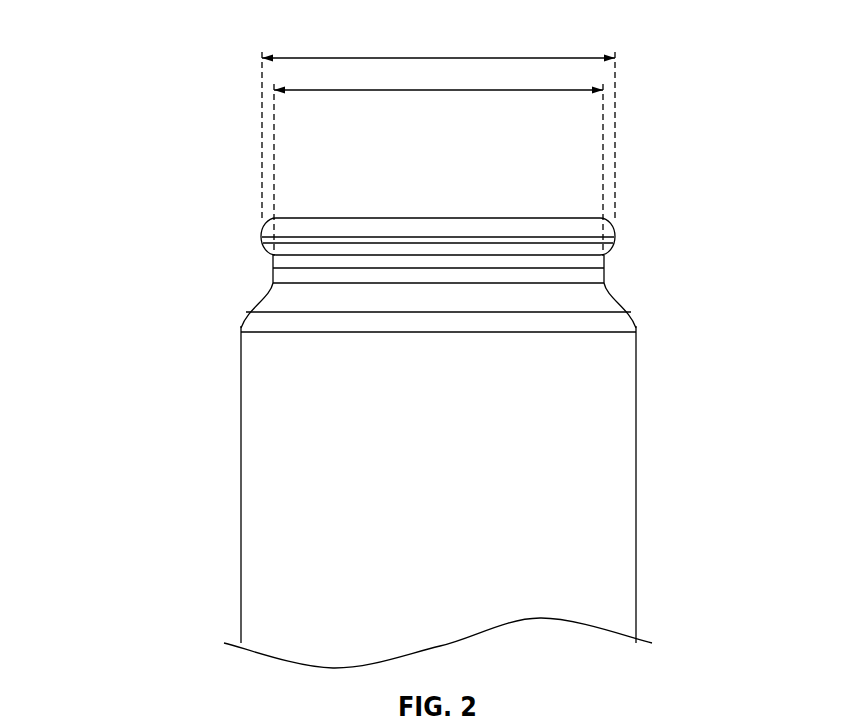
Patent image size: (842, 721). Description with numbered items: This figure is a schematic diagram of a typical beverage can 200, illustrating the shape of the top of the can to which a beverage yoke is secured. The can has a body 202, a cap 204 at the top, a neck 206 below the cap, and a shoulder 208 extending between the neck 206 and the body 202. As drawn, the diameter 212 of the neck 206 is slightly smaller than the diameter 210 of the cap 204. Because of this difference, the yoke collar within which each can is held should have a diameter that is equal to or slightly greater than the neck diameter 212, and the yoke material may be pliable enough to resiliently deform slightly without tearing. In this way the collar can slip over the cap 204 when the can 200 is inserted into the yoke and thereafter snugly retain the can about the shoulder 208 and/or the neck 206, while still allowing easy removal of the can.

The beverage can 200 is at (170, 26).
The body 202 is at (638, 484).
The cap 204 is at (316, 218).
The neck 206 is at (606, 264).
The shoulder 208 is at (262, 293).
The diameter of the cap 210 is at (438, 57).
The diameter of the neck 212 is at (469, 92).